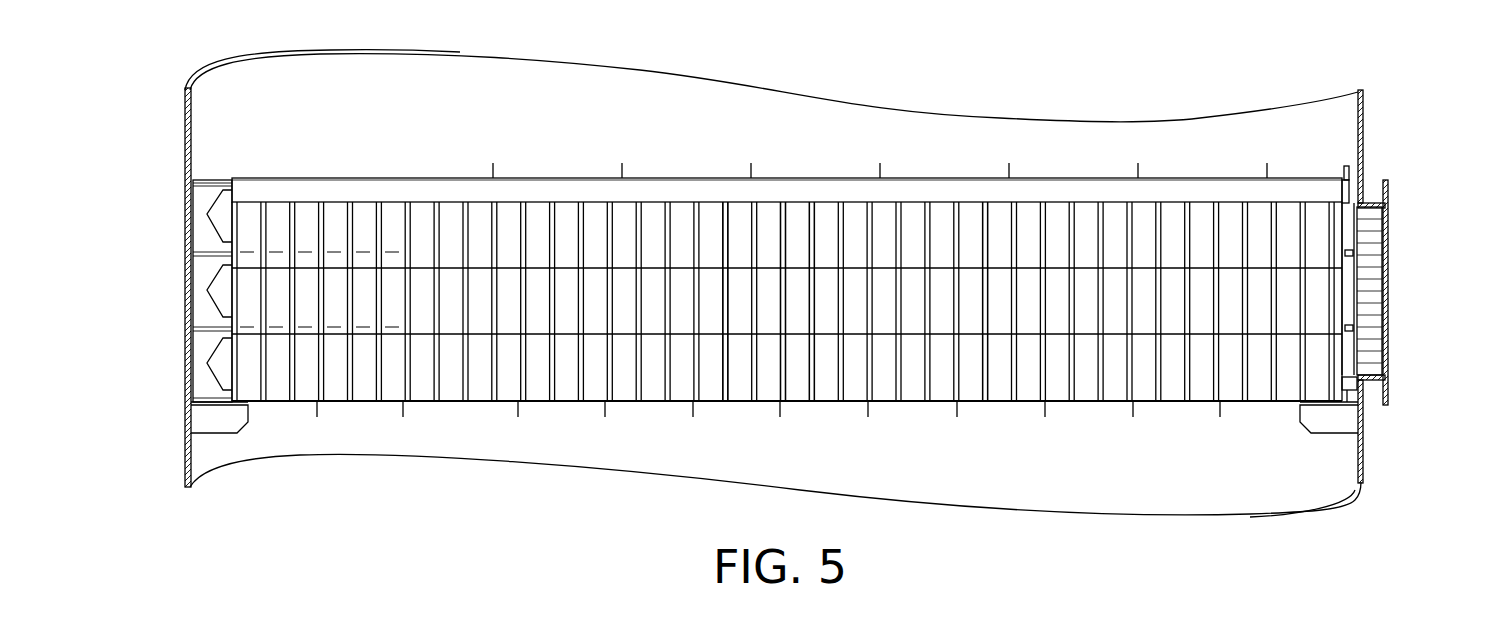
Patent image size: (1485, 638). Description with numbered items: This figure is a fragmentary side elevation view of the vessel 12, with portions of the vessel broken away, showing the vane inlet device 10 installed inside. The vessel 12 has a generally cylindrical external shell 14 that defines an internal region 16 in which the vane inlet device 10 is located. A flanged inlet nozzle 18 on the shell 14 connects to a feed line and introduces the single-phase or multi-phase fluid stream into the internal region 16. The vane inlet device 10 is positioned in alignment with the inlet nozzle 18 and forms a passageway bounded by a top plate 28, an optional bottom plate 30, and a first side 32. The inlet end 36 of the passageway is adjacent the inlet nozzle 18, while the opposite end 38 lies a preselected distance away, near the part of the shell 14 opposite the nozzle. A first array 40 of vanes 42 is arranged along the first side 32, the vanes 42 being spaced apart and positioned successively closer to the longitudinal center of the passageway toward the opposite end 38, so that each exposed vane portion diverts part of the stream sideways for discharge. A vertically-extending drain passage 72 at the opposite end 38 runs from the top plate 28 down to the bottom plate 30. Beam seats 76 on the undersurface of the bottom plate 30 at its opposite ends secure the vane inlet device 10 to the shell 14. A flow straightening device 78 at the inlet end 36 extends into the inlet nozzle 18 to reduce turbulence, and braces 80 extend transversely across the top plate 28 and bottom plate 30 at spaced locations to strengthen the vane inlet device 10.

The vane inlet device 10 is at (787, 272).
The vessel 12 is at (1165, 118).
The external shell 14 is at (1362, 130).
The internal region 16 is at (1331, 135).
The flanged inlet nozzle 18 is at (1387, 195).
The top plate 28 is at (680, 178).
The bottom plate 30 is at (738, 403).
The first side 32 is at (995, 403).
The inlet end 36 is at (1350, 392).
The opposite end 38 is at (232, 213).
The first array 40 is at (881, 395).
The vanes 42 is at (825, 392).
The drain passage 72 is at (214, 150).
The beam seats 76 is at (220, 425).
The flow straightening device 78 is at (1375, 252).
The braces 80 is at (1140, 172).